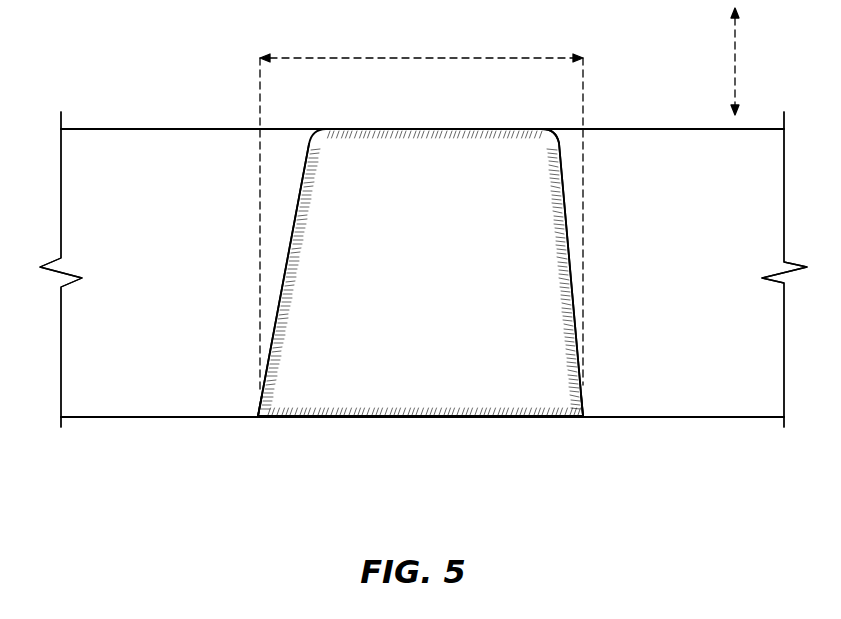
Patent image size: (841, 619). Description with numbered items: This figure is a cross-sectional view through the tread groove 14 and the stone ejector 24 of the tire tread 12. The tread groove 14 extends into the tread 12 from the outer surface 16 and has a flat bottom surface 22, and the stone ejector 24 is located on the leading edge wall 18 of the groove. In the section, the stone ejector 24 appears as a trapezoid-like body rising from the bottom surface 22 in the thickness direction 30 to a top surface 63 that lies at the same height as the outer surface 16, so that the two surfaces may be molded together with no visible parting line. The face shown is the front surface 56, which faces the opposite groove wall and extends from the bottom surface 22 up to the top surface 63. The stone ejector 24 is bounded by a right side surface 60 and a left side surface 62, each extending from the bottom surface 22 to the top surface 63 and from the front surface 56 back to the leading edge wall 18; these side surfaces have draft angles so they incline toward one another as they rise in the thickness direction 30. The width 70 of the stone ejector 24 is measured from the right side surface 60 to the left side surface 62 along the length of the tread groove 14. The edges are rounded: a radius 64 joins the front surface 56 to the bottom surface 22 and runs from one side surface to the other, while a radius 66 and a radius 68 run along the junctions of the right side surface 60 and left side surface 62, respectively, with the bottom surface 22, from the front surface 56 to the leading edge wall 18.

The tread 12 is at (650, 128).
The tread groove 14 is at (690, 261).
The outer surface 16 is at (173, 128).
The leading edge wall 18 is at (113, 259).
The bottom surface 22 is at (723, 415).
The stone ejector 24 is at (402, 301).
The thickness direction 30 is at (733, 62).
The front surface 56 is at (426, 158).
The right side surface 60 is at (295, 220).
The left side surface 62 is at (568, 222).
The top surface 63 is at (484, 125).
The radius 64 is at (375, 412).
The radius 66 is at (255, 413).
The radius 68 is at (588, 412).
The width 70 is at (365, 57).